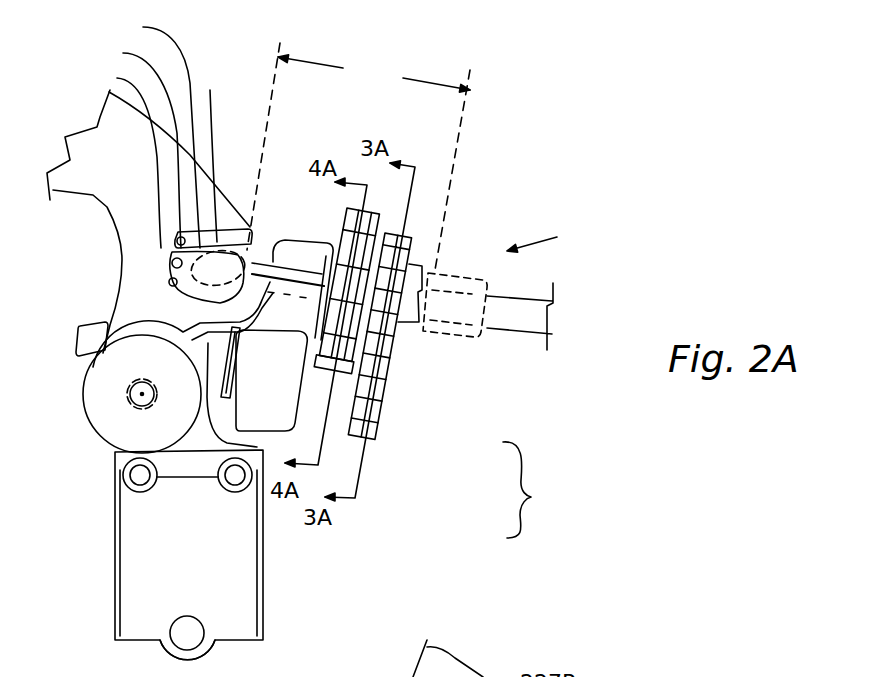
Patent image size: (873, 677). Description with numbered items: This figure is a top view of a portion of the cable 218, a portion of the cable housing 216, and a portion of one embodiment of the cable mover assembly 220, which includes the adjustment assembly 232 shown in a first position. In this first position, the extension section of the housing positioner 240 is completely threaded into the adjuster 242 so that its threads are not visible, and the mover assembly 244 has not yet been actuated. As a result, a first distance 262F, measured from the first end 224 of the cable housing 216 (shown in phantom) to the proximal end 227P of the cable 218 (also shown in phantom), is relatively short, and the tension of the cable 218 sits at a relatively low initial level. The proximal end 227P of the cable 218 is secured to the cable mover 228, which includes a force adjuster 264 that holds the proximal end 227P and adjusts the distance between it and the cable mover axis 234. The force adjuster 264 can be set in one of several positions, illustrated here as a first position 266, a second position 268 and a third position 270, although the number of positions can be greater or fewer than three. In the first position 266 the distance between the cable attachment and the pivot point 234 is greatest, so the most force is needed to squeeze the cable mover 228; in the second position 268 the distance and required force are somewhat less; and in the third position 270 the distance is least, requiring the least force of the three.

The cable housing 216 is at (508, 323).
The cable 218 is at (305, 270).
The cable mover assembly 220 is at (617, 254).
The first end 224 is at (437, 275).
The proximal end 227P is at (260, 180).
The cable mover 228 is at (133, 227).
The adjustment assembly 232 is at (538, 490).
The cable mover axis 234 is at (140, 393).
The housing positioner 240 is at (443, 325).
The adjuster 242 is at (397, 339).
The mover assembly 244 is at (258, 403).
The first distance 262F is at (358, 156).
The force adjuster 264 is at (217, 263).
The first position 266 is at (143, 27).
The second position 268 is at (123, 53).
The third position 270 is at (117, 78).